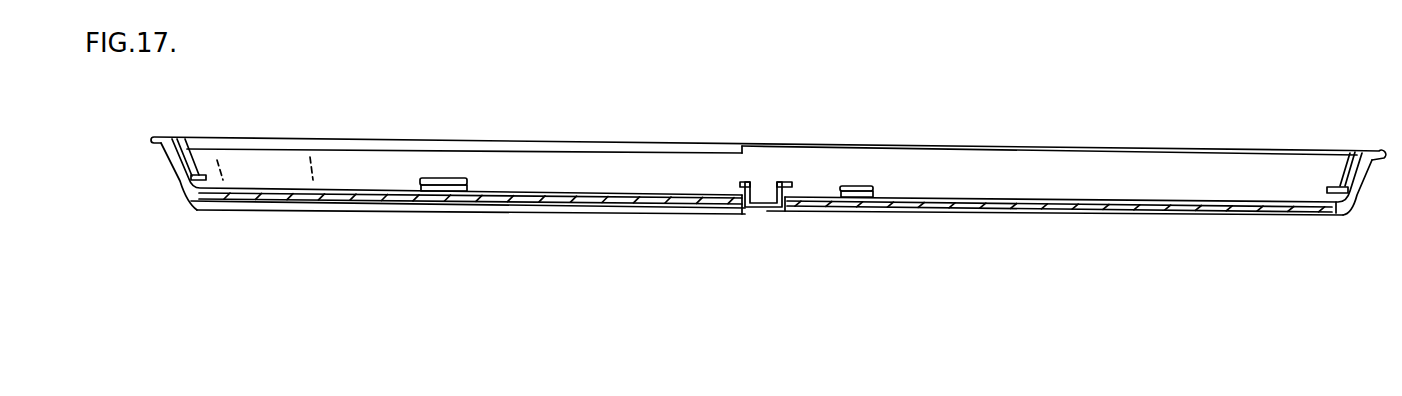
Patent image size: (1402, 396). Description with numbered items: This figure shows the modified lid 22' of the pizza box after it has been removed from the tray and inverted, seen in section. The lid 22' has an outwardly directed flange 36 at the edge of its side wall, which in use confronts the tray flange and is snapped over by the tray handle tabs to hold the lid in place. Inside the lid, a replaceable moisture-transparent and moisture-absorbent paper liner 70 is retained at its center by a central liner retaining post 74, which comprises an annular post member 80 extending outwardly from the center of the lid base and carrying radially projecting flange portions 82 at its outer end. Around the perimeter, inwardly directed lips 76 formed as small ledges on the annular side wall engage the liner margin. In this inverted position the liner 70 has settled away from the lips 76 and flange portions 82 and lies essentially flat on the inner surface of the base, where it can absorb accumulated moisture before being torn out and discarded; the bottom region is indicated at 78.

The outwardly directed flange 36 is at (158, 165).
The inwardly directed lips 76 is at (207, 175).
The tray bottom 78 is at (223, 207).
The liner 70 is at (632, 189).
The modified lid 22' is at (1060, 243).
The annular post member 80 is at (770, 198).
The radially projecting flange portions 82 is at (742, 183).
The central liner retaining post 74 is at (761, 160).